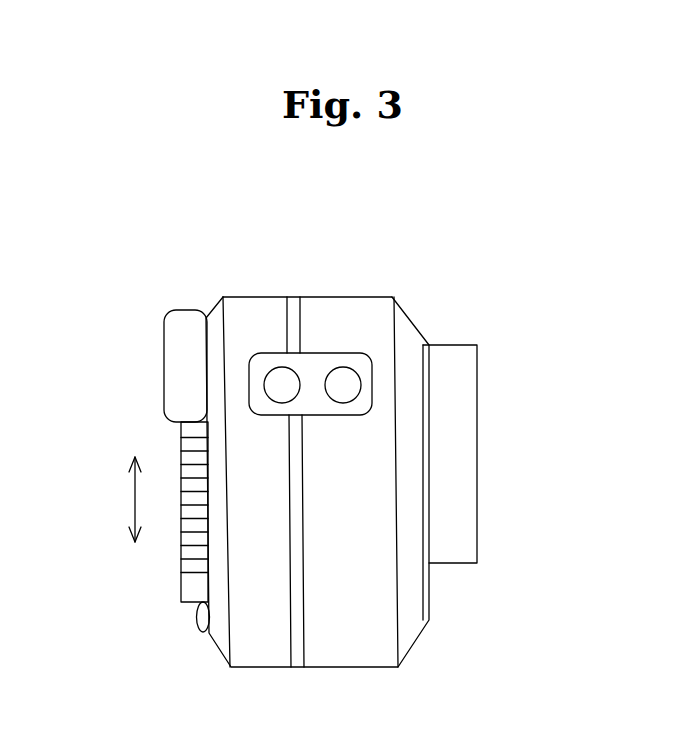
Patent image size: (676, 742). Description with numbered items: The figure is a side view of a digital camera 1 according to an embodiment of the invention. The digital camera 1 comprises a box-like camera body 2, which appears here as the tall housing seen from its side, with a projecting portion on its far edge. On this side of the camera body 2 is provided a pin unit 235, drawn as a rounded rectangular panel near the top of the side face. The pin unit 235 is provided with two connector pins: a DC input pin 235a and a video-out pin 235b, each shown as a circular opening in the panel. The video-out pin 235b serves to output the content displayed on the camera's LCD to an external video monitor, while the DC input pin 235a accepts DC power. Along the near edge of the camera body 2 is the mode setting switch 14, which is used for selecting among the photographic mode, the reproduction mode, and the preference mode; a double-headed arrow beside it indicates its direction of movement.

The digital camera 1 is at (528, 271).
The camera body 2 is at (252, 282).
The mode setting switch 14 is at (178, 447).
The pin unit 235 is at (427, 232).
The DC input pin 235a is at (290, 383).
The video-out pin 235b is at (346, 383).